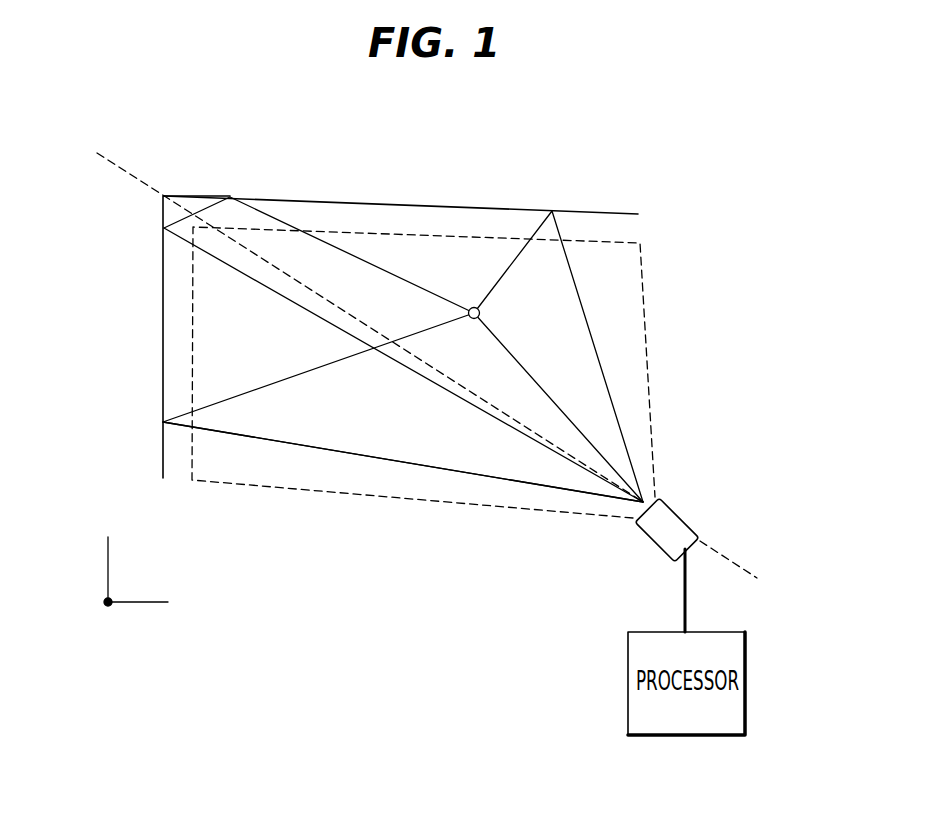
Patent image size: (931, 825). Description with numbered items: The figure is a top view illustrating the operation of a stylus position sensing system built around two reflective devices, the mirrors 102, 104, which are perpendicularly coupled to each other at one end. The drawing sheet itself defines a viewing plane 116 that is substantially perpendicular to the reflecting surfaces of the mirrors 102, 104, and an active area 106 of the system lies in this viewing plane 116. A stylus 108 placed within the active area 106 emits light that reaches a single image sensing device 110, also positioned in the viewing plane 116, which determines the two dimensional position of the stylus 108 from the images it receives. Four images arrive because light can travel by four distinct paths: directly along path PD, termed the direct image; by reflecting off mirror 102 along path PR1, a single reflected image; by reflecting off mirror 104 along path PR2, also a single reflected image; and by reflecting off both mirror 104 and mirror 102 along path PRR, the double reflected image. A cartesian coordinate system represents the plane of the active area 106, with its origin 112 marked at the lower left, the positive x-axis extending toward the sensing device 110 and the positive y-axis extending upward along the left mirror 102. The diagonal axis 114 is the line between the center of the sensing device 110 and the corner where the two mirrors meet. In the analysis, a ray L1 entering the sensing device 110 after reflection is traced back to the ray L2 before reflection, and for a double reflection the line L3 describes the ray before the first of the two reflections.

The mirror 102 is at (159, 382).
The mirror 104 is at (588, 212).
The active area 106 is at (628, 255).
The stylus 108 is at (476, 307).
The image sensing device 110 is at (685, 518).
The origin of the coordinate system 112 is at (105, 605).
The diagonal axis 114 is at (135, 178).
The viewing plane 116 is at (799, 350).
The reflected ray line L1 is at (292, 448).
The ray before reflection L2 is at (275, 378).
The ray before first reflection L3 is at (405, 280).
The single reflected image path PR1 is at (408, 462).
The single reflected image path PR2 is at (598, 337).
The double reflected image path PRR is at (488, 413).
The direct image path PD is at (548, 390).